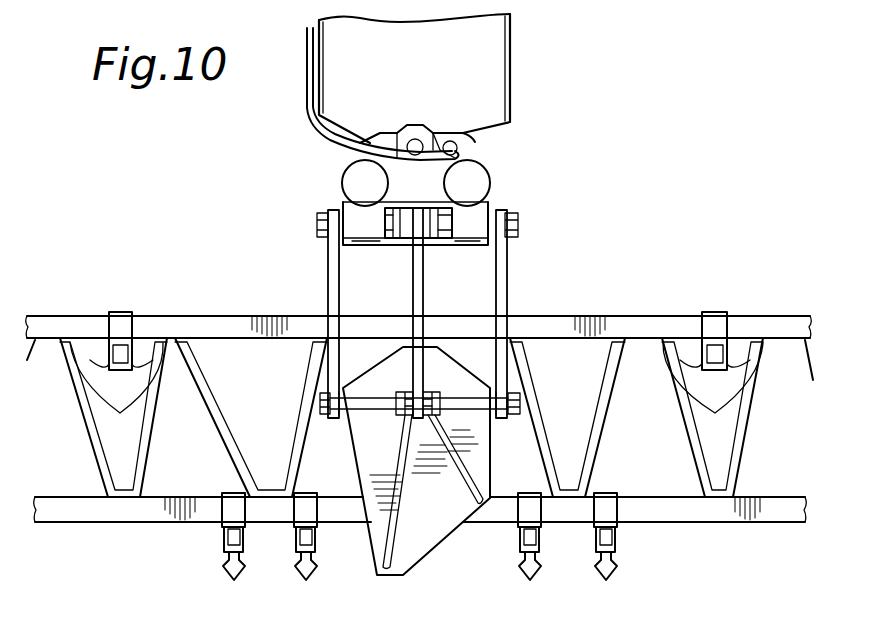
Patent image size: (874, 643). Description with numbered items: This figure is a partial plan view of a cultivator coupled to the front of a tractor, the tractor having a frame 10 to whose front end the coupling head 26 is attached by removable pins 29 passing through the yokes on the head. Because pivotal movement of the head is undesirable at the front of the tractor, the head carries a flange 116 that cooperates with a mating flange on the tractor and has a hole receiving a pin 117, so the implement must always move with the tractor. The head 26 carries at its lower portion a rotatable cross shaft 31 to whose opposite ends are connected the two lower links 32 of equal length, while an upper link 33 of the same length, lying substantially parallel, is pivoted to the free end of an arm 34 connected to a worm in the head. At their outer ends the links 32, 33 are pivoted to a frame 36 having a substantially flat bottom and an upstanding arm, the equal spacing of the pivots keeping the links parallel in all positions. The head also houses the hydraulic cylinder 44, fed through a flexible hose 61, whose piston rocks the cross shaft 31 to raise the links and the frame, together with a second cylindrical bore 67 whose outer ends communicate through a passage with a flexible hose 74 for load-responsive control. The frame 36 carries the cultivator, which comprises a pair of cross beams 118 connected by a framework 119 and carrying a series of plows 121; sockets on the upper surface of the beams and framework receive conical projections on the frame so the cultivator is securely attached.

The frame 10 is at (496, 68).
The flexible hose 61 is at (307, 89).
The flexible hose 74 is at (307, 104).
The removable pins 29 is at (418, 139).
The pin 117 is at (460, 147).
The flange 116 is at (457, 152).
The head 26 is at (402, 180).
The cylinder 44 is at (352, 190).
The second cylindrical bore 67 is at (480, 190).
The arm 34 is at (425, 243).
The cross shaft 31 is at (519, 228).
The lower links 32 is at (328, 279).
The upper link 33 is at (423, 286).
The frame 36 is at (436, 540).
The cross beams 118 is at (235, 323).
The framework 119 is at (302, 427).
The plows 121 is at (118, 410).